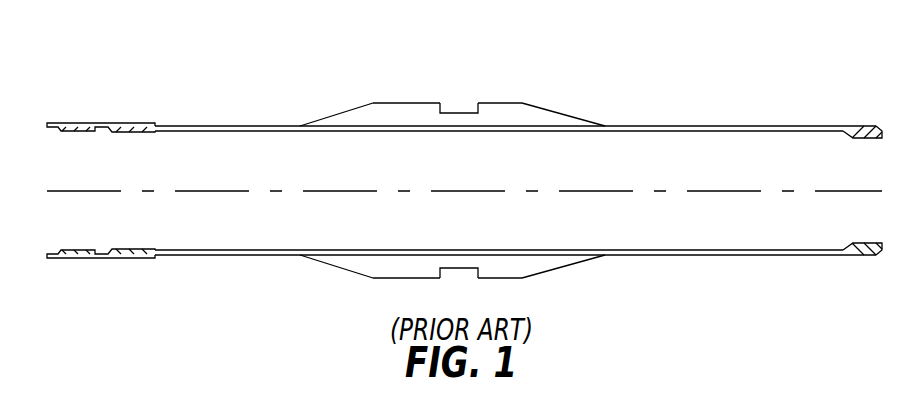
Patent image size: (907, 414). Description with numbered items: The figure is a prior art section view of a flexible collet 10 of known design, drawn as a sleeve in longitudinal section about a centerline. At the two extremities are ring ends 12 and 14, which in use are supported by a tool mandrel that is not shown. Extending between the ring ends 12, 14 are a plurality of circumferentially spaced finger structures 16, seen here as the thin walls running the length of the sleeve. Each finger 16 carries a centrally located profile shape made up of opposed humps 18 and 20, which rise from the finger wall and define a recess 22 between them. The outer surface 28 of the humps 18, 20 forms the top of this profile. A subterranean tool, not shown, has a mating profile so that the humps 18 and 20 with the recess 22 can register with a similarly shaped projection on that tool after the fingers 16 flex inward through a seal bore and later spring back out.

The flexible collet 10 is at (598, 64).
The ring end 12 is at (51, 122).
The ring end 14 is at (866, 125).
The finger structures 16 is at (203, 127).
The hump 18 is at (375, 118).
The hump 20 is at (546, 118).
The recess 22 is at (466, 112).
The outer surface 28 is at (408, 102).